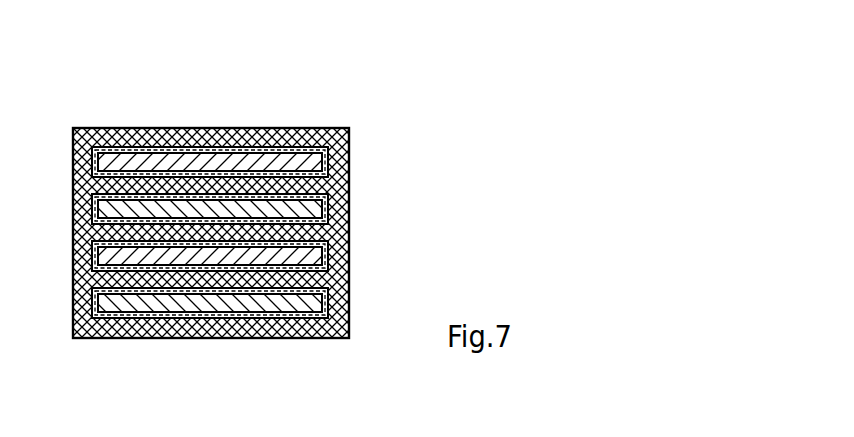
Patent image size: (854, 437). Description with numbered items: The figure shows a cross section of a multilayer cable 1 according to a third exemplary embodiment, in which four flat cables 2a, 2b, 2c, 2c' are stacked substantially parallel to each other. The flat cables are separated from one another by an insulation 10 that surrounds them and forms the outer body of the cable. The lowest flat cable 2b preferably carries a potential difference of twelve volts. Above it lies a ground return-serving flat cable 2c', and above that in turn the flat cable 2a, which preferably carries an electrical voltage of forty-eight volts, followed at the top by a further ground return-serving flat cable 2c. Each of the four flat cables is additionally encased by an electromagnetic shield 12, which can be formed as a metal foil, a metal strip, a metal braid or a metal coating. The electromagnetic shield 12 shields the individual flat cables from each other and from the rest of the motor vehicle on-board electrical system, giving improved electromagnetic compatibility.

The multilayer cable 1 is at (208, 221).
The insulation 10 is at (72, 177).
The electromagnetic shield 12 is at (119, 152).
The flat cable 2c is at (250, 157).
The flat cable 2a is at (315, 212).
The flat cable 2c' is at (252, 253).
The flat cable 2b is at (315, 305).